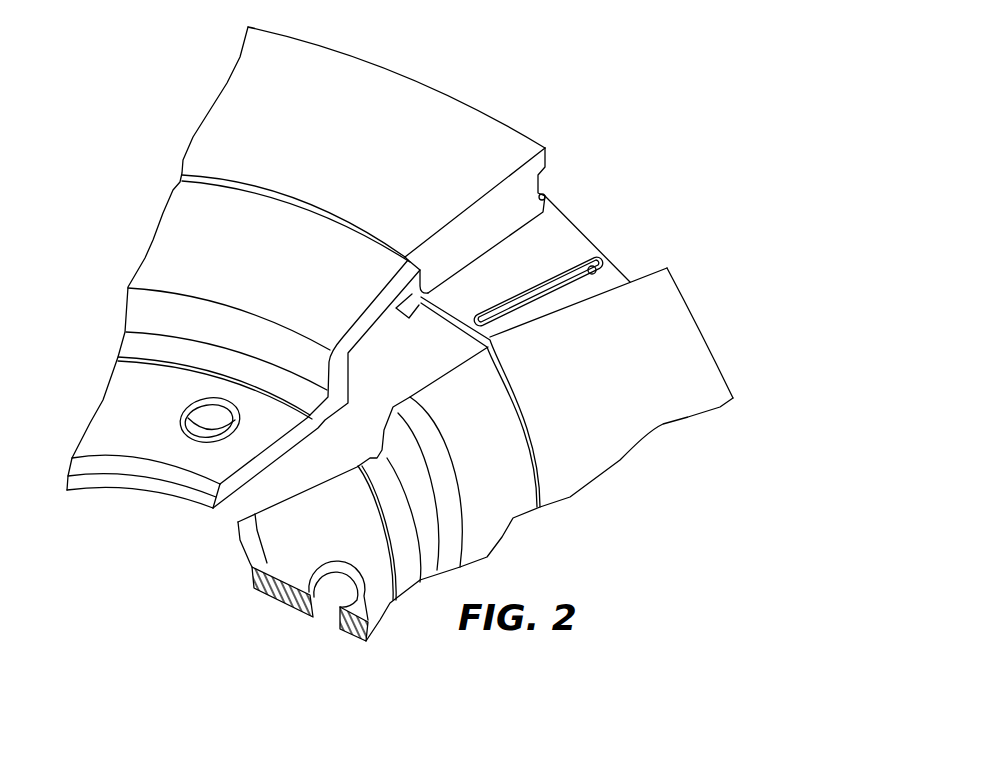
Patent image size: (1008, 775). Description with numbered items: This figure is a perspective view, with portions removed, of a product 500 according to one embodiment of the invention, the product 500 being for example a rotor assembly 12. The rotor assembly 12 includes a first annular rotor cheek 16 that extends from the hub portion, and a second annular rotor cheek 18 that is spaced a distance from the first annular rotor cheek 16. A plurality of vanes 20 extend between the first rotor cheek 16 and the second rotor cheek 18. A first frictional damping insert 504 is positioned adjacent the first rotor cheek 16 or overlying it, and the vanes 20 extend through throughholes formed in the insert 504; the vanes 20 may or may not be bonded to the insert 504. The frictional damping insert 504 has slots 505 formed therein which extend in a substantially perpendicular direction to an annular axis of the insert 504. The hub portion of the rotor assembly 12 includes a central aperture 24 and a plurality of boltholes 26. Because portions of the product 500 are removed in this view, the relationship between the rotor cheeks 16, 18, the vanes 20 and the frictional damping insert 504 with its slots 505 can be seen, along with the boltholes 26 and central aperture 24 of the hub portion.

The rotor assembly 12 is at (758, 318).
The first annular rotor cheek 16 is at (473, 137).
The second annular rotor cheek 18 is at (403, 317).
The vanes 20 is at (523, 192).
The central aperture 24 is at (192, 493).
The boltholes 26 is at (197, 416).
The product 500 is at (712, 440).
The first frictional damping insert 504 is at (560, 228).
The slots 505 is at (603, 262).